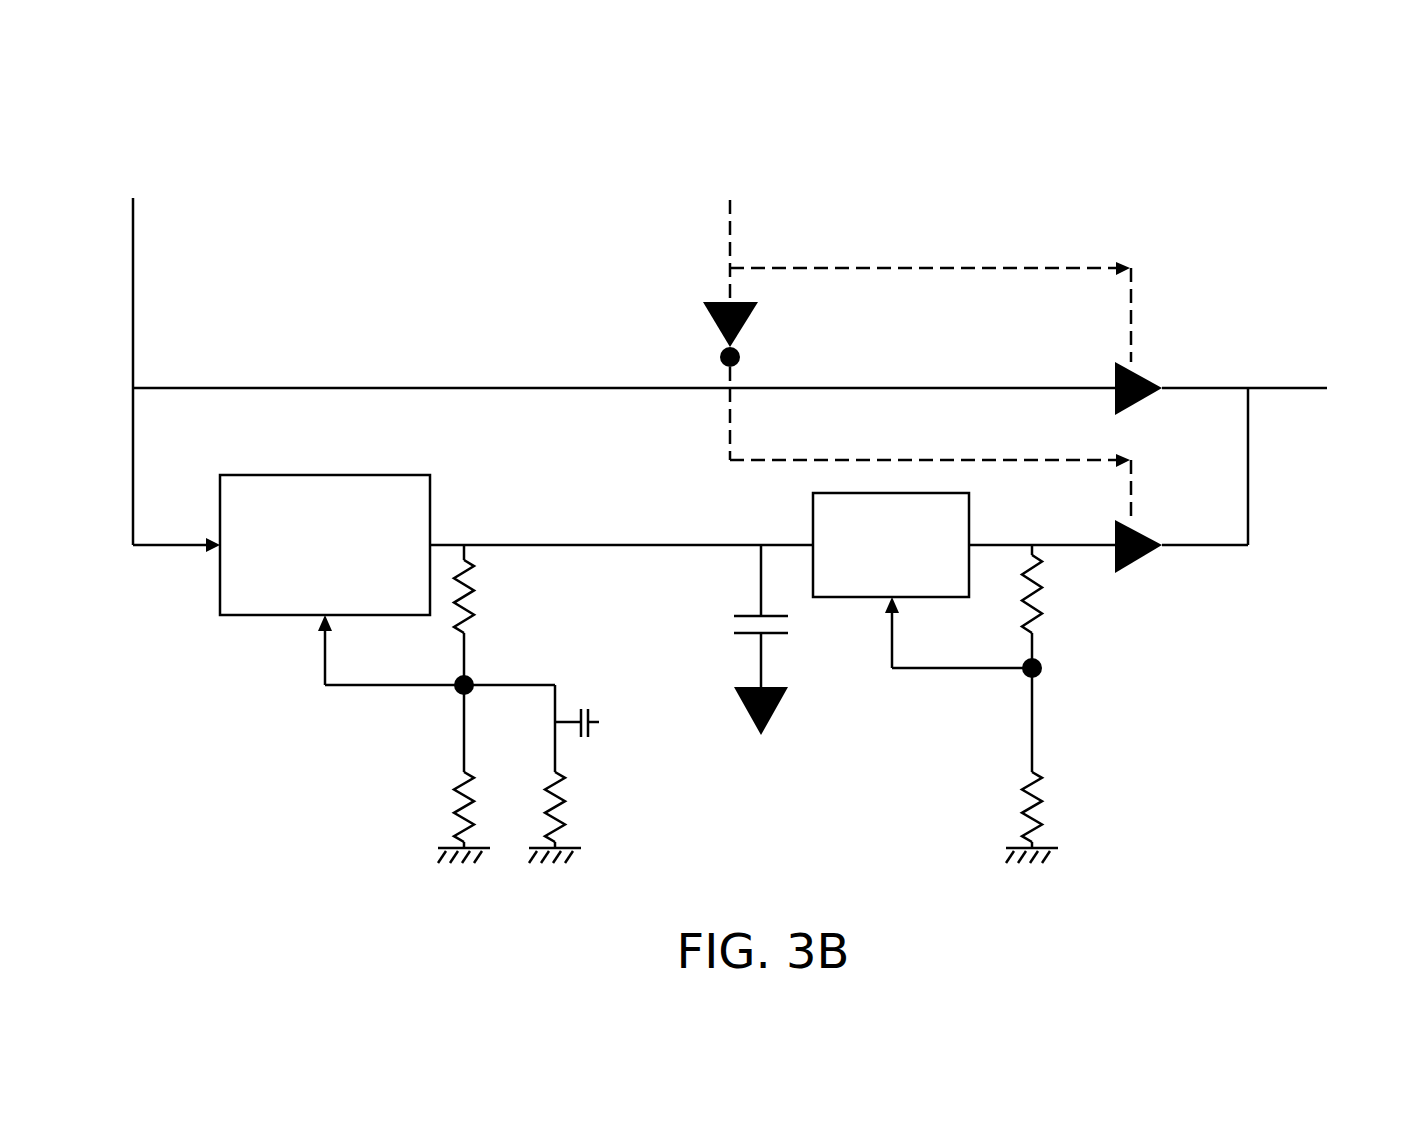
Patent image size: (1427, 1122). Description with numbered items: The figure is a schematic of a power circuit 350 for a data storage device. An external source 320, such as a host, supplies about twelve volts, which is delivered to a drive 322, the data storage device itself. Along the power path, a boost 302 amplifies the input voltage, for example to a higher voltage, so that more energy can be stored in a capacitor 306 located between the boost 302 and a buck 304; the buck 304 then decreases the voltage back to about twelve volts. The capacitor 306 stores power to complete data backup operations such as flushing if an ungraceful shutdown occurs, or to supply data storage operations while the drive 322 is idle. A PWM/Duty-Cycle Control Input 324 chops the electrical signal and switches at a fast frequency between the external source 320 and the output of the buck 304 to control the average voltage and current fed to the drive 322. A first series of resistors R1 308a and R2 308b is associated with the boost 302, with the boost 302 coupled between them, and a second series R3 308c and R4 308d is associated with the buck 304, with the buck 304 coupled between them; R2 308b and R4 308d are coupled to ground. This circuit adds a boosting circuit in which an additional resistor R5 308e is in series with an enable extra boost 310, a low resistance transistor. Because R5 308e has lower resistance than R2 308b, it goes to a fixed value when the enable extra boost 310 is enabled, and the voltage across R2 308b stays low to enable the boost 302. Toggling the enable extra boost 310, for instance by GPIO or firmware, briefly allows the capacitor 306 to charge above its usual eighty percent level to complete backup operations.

The power circuit 350 is at (148, 98).
The external source 320 is at (114, 192).
The PWM/Duty-Cycle Control Input 324 is at (711, 192).
The drive 322 is at (1373, 426).
The boost 302 is at (306, 571).
The buck 304 is at (872, 571).
The capacitor 306 is at (681, 656).
The R1 308a is at (482, 626).
The R2 308b is at (480, 836).
The R3 308c is at (1052, 627).
The R4 308d is at (1052, 836).
The R5 308e is at (572, 827).
The enable extra boost 310 is at (646, 761).